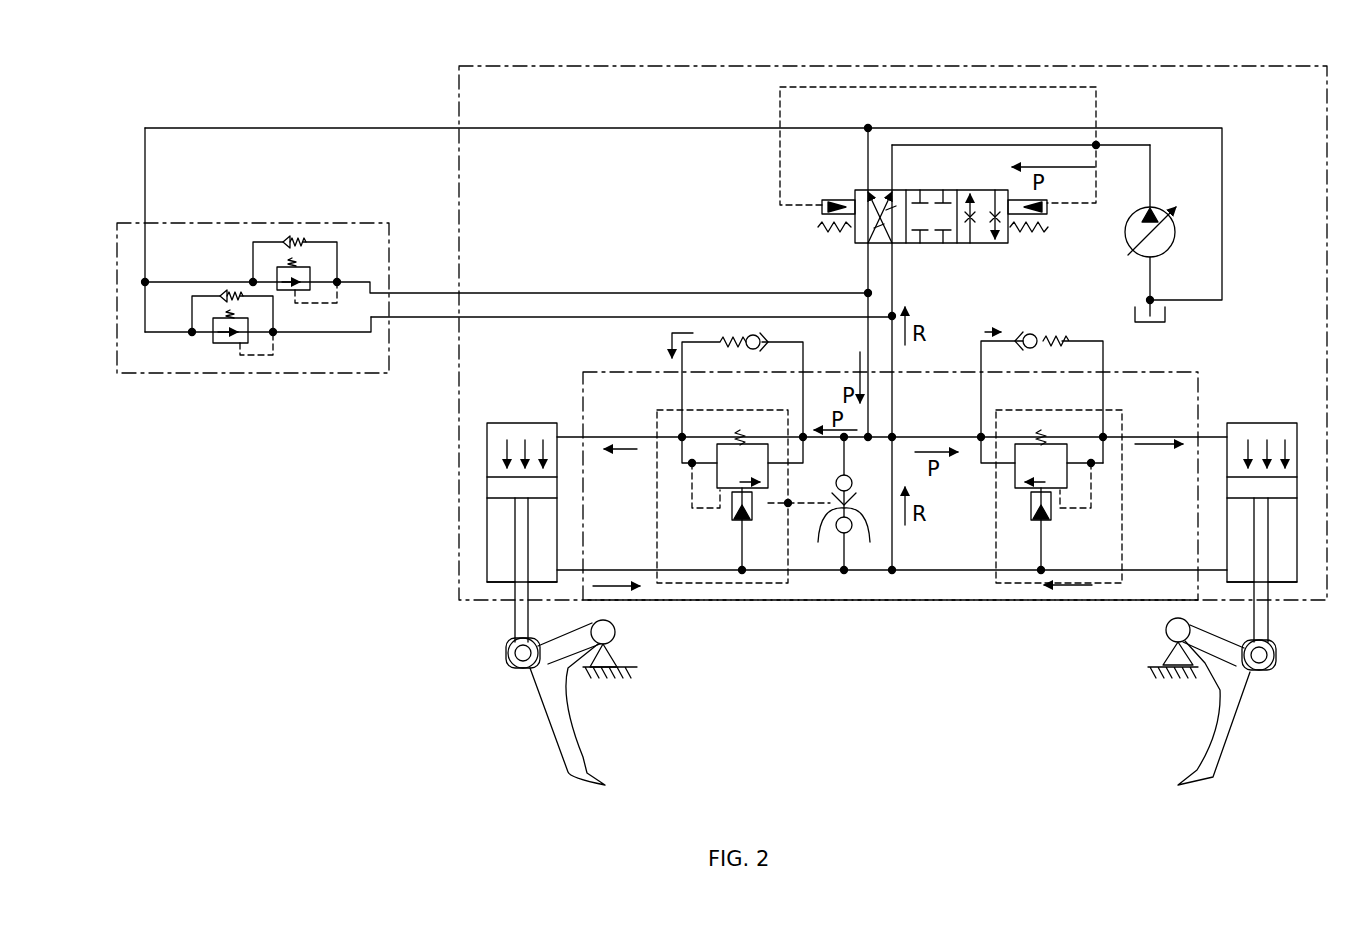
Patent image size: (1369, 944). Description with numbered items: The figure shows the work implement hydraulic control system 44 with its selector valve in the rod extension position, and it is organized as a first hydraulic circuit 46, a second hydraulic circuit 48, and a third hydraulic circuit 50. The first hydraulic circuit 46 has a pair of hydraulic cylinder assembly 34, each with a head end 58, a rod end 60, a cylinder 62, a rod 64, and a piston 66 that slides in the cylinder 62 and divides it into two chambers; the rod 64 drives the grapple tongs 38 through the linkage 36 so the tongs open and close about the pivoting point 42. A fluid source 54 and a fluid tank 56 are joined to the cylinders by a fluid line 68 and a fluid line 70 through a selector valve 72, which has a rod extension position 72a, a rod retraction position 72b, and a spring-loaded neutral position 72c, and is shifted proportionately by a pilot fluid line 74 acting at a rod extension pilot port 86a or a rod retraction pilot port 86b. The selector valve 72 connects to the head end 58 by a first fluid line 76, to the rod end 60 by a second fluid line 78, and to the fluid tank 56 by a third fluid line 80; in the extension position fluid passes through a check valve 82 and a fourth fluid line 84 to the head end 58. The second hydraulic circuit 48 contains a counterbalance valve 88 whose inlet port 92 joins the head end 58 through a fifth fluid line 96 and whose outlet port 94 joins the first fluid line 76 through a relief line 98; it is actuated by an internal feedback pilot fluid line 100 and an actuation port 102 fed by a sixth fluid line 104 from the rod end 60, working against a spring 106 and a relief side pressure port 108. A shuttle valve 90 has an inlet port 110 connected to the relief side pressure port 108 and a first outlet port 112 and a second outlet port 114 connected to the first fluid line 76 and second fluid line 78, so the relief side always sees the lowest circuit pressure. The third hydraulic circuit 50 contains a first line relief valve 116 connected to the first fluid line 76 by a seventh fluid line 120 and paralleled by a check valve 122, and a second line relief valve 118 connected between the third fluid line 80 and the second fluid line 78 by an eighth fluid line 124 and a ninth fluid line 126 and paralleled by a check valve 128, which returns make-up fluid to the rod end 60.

The hydraulic cylinder assembly 34 is at (476, 557).
The linkage 36 is at (508, 656).
The grapple tongs 38 is at (590, 776).
The pivoting point 42 is at (615, 635).
The hydraulic control system 44 is at (290, 641).
The first hydraulic circuit 46 is at (459, 430).
The second hydraulic circuit 48 is at (1020, 600).
The third hydraulic circuit 50 is at (390, 223).
The fluid source 54 is at (1176, 242).
The fluid tank 56 is at (1170, 324).
The head end 58 is at (527, 423).
The rod end 60 is at (555, 584).
The cylinder 62 is at (487, 497).
The rod 64 is at (515, 618).
The piston 66 is at (487, 520).
The fluid line 68 is at (1152, 150).
The fluid line 70 is at (993, 147).
The selector valve 72 is at (968, 260).
The rod extension position 72a is at (858, 243).
The rod retraction position 72b is at (1010, 243).
The neutral position 72c is at (933, 205).
The pilot fluid line 74 is at (1092, 180).
The first fluid line 76 is at (868, 334).
The second fluid line 78 is at (893, 284).
The third fluid line 80 is at (1199, 128).
The check valve 82 is at (758, 337).
The fourth fluid line 84 is at (612, 437).
The rod extension pilot port 86a is at (818, 223).
The rod retraction pilot port 86b is at (1050, 212).
The counterbalance valve 88 is at (766, 530).
The shuttle valve 90 is at (826, 498).
The inlet port 92 is at (717, 462).
The outlet port 94 is at (757, 506).
The fifth fluid line 96 is at (692, 463).
The relief line 98 is at (803, 463).
The pilot fluid line 100 is at (700, 509).
The actuation port 102 is at (742, 526).
The sixth fluid line 104 is at (613, 570).
The spring 106 is at (740, 430).
The relief side pressure port 108 is at (755, 444).
The inlet port 110 is at (836, 531).
The first outlet port 112 is at (880, 471).
The second outlet port 114 is at (855, 527).
The first line relief valve 116 is at (310, 280).
The second line relief valve 118 is at (236, 345).
The seventh fluid line 120 is at (495, 293).
The check valve 122 is at (292, 240).
The eighth fluid line 124 is at (168, 334).
The ninth fluid line 126 is at (408, 318).
The check valve 128 is at (222, 292).